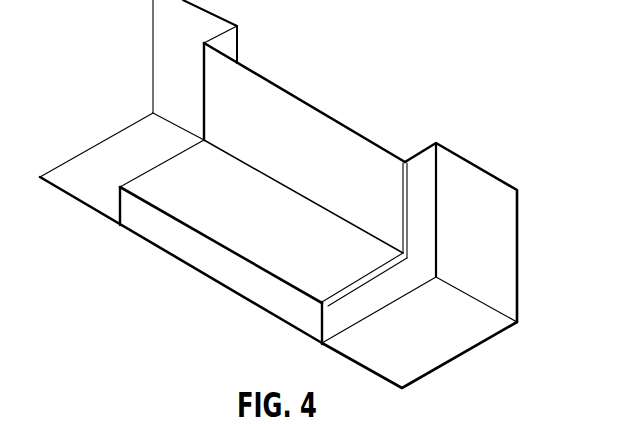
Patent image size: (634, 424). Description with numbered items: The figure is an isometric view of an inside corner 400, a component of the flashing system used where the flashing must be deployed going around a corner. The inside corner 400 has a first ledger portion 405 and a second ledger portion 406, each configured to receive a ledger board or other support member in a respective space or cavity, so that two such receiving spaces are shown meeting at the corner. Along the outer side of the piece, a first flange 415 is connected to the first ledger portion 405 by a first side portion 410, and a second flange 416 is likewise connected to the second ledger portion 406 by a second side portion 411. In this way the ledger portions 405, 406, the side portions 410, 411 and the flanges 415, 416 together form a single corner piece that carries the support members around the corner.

The inside corner 400 is at (335, 194).
The first ledger portion 405 is at (249, 241).
The second ledger portion 406 is at (296, 114).
The first side portion 410 is at (342, 318).
The second side portion 411 is at (418, 175).
The first flange 415 is at (420, 350).
The second flange 416 is at (481, 192).